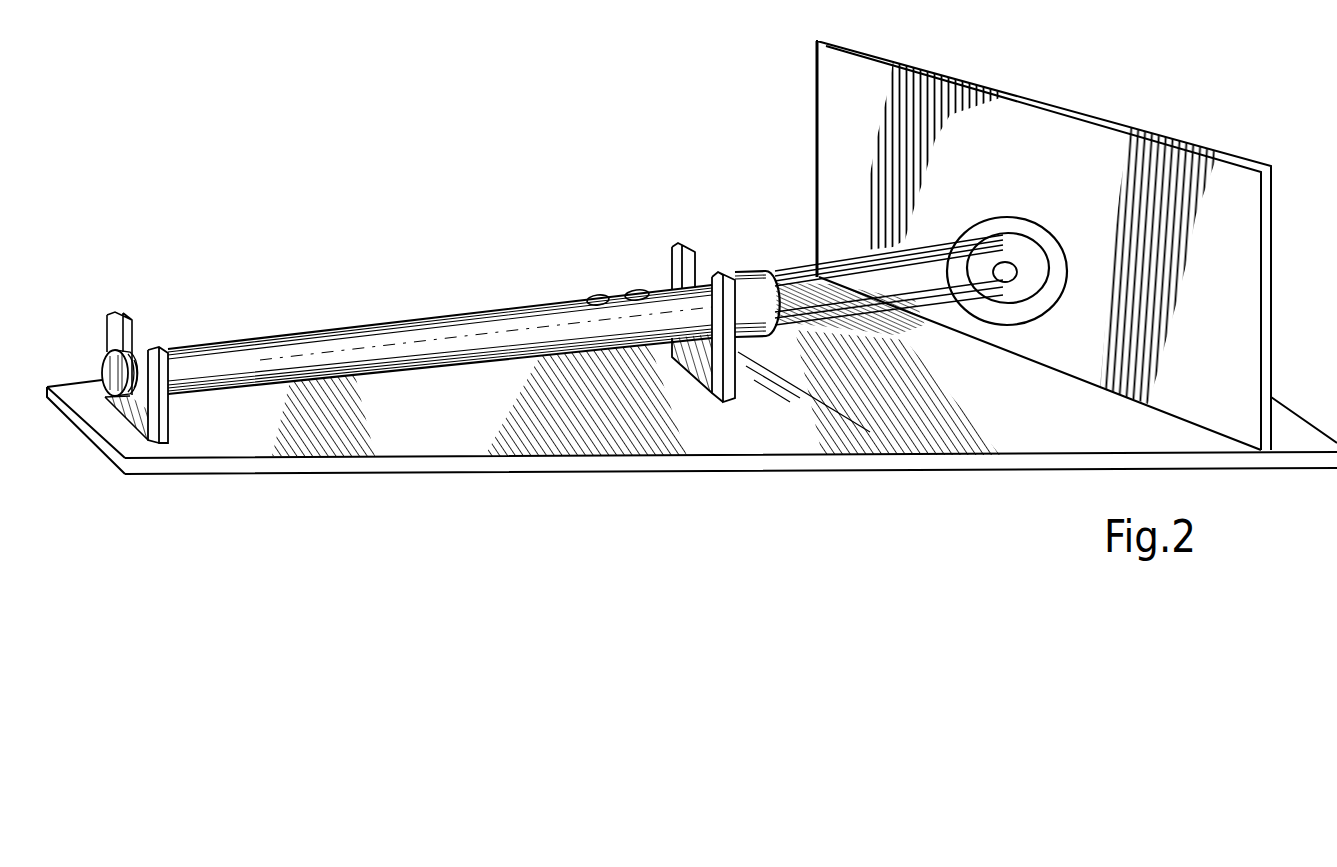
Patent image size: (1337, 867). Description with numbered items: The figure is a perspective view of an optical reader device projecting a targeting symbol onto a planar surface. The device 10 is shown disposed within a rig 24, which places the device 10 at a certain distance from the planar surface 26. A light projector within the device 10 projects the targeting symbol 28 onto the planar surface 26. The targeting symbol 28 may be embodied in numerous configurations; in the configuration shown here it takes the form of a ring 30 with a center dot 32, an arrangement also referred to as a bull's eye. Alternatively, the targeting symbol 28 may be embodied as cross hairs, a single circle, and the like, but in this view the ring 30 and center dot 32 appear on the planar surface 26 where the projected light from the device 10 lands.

The device 10 is at (398, 333).
The rig 24 is at (674, 268).
The planar surface 26 is at (1103, 137).
The targeting symbol 28 is at (1020, 205).
The ring 30 is at (1068, 255).
The center dot 32 is at (1008, 282).